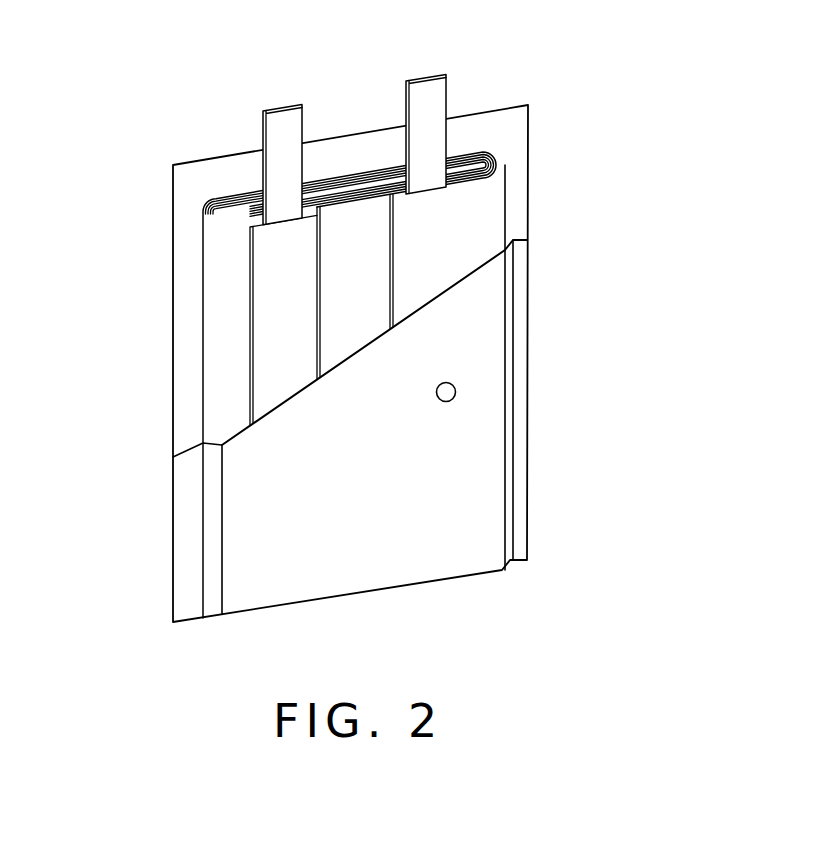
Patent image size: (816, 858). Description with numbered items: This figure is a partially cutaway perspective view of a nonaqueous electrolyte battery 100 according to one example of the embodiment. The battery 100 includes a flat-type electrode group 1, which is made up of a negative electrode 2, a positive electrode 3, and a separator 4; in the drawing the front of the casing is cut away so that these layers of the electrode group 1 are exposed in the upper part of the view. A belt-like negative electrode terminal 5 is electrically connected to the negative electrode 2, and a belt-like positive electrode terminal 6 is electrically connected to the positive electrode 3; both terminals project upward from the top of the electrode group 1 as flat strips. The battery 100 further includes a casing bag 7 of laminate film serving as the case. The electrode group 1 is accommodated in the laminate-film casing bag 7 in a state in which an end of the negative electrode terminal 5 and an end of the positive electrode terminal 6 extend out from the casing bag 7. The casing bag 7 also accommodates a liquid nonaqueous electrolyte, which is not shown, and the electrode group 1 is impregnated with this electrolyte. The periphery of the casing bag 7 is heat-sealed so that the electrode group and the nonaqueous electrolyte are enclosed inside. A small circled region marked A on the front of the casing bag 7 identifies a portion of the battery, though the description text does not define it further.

The nonaqueous electrolyte battery 100 is at (407, 326).
The flat-type electrode group 1 is at (415, 385).
The negative electrode 2 is at (590, 305).
The positive electrode 3 is at (288, 290).
The separator 4 is at (365, 243).
The negative electrode terminal 5 is at (428, 95).
The positive electrode terminal 6 is at (282, 118).
The casing bag 7 is at (478, 467).
The region A is at (456, 390).